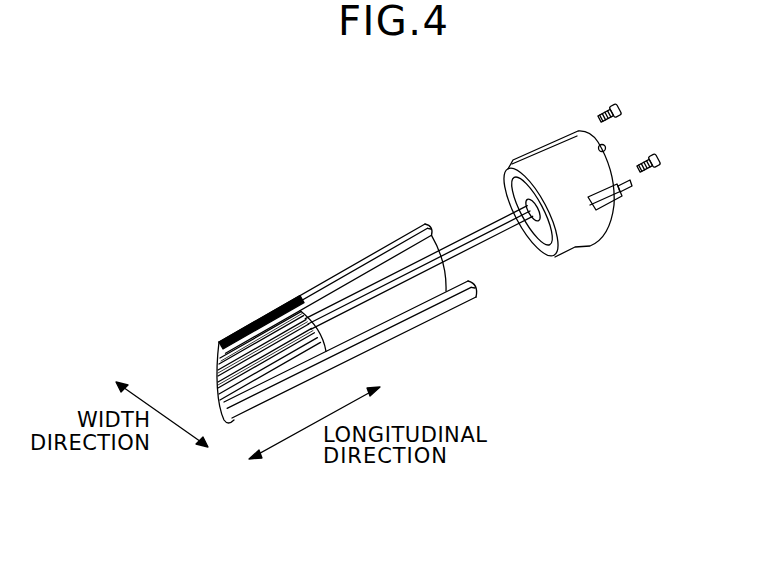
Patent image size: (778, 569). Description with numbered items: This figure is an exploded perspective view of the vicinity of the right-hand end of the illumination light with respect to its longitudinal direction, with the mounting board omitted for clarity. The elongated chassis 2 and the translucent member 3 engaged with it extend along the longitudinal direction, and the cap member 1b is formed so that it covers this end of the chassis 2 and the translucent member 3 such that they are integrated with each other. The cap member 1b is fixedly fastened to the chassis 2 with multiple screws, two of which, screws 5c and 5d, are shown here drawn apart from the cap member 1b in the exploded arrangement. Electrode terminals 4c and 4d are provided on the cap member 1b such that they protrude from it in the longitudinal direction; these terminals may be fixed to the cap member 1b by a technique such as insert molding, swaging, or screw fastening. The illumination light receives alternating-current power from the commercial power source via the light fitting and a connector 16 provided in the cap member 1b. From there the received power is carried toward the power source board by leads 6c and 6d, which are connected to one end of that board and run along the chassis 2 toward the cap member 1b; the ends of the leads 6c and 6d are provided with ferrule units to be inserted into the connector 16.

The cap member 1b is at (538, 162).
The connector 16 is at (508, 193).
The chassis 2 is at (253, 320).
The translucent member 3 is at (427, 318).
The electrode terminal 4c is at (610, 148).
The electrode terminal 4d is at (622, 196).
The screw 5c is at (603, 122).
The screw 5d is at (646, 172).
The lead 6c is at (478, 226).
The lead 6d is at (497, 240).